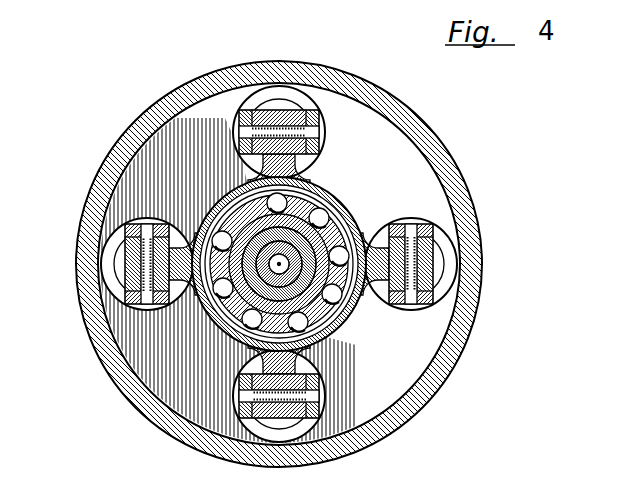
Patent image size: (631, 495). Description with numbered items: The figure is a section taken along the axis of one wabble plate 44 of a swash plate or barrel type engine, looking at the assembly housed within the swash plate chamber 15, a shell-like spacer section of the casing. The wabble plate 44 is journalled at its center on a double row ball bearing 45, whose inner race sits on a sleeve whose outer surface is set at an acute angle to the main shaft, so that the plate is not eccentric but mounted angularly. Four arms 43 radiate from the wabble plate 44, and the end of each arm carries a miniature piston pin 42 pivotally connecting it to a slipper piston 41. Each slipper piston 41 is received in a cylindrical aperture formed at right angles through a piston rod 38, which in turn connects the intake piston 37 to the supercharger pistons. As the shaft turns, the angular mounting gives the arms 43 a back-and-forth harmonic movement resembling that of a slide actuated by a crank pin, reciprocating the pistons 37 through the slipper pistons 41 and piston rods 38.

The swash plate chamber 15 is at (468, 343).
The piston 37 is at (278, 430).
The piston rod 38 is at (137, 223).
The slipper piston 41 is at (132, 297).
The miniature piston pin 42 is at (135, 287).
The arm 43 is at (133, 258).
The swash or wabble plate 44 is at (348, 208).
The double row ball bearing 45 is at (348, 303).